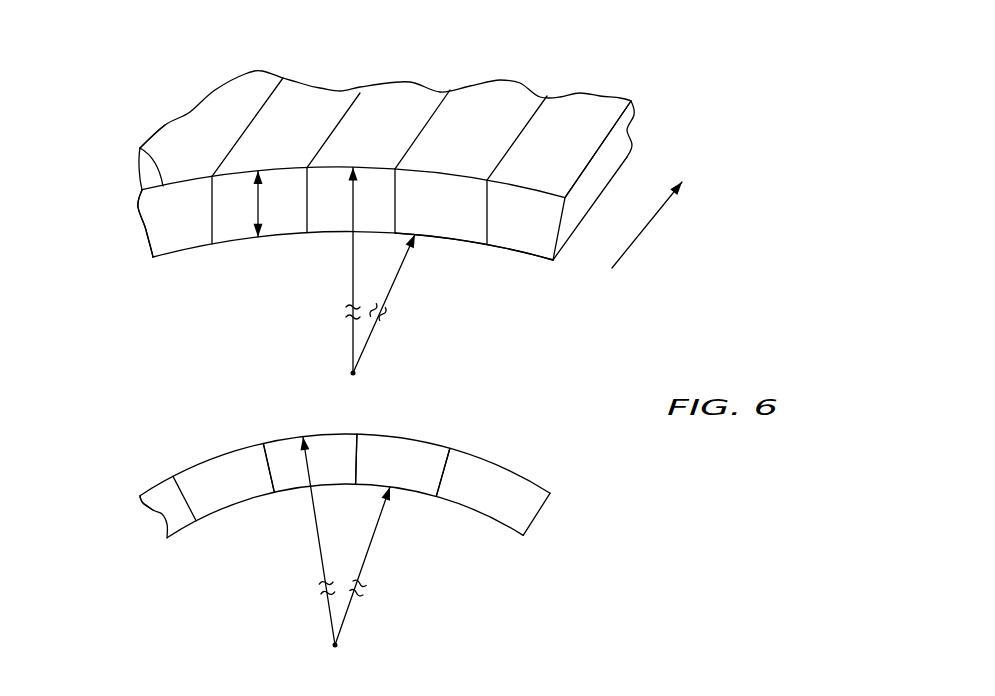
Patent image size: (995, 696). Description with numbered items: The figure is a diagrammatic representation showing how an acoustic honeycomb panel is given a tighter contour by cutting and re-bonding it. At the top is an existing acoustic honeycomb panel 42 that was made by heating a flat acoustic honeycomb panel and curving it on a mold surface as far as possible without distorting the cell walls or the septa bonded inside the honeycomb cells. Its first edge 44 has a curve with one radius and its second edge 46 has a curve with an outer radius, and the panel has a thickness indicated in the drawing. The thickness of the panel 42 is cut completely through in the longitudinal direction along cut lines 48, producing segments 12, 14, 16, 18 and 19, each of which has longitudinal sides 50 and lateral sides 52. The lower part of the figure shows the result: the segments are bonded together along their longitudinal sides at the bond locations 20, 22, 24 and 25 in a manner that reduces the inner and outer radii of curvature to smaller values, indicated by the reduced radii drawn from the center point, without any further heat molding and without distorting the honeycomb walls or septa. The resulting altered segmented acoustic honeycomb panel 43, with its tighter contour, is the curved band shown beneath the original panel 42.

The segment 12 is at (292, 96).
The segment 14 is at (383, 107).
The segment 16 is at (487, 103).
The segment 18 is at (593, 108).
The segment 19 is at (181, 122).
The bond between longitudinal sides 20 is at (265, 466).
The bond between longitudinal sides 22 is at (358, 450).
The bond between longitudinal sides 24 is at (447, 472).
The bond between longitudinal sides 25 is at (185, 514).
The acoustic honeycomb panel 42 is at (693, 147).
The altered segmented acoustic honeycomb panel 43 is at (500, 394).
The first edge 44 is at (497, 250).
The second edge 46 is at (143, 150).
The cut lines 48 is at (220, 97).
The longitudinal sides 50 is at (590, 188).
The lateral sides 52 is at (172, 225).